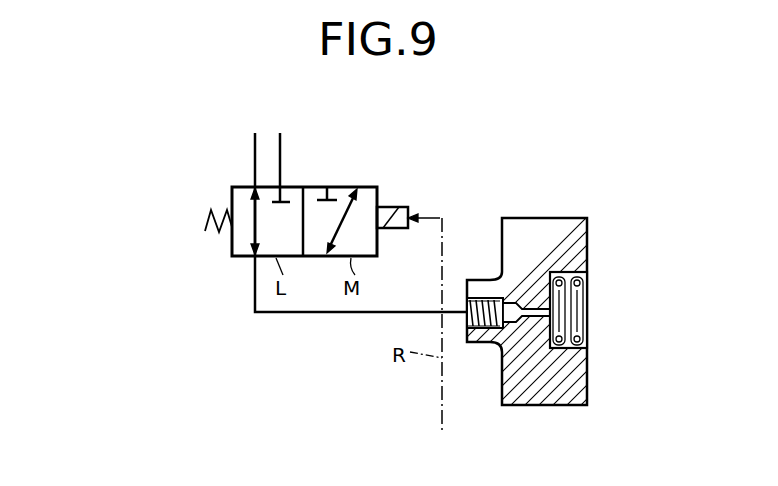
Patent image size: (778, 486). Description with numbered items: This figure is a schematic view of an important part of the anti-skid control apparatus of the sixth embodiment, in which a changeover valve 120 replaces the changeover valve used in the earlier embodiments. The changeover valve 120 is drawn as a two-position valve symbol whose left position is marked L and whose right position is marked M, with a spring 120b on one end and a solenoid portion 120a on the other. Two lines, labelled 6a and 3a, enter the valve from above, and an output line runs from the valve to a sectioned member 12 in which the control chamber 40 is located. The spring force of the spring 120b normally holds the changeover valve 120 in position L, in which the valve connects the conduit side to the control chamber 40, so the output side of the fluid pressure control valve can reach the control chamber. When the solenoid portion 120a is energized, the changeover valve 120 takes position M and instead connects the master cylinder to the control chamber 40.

The changeover valve 120 is at (343, 186).
The solenoid portion 120a is at (389, 207).
The spring 120b is at (205, 222).
The hydraulic line 6a is at (255, 145).
The hydraulic line 3a is at (282, 148).
The valve body 12 is at (531, 217).
The control chamber 40 is at (578, 346).